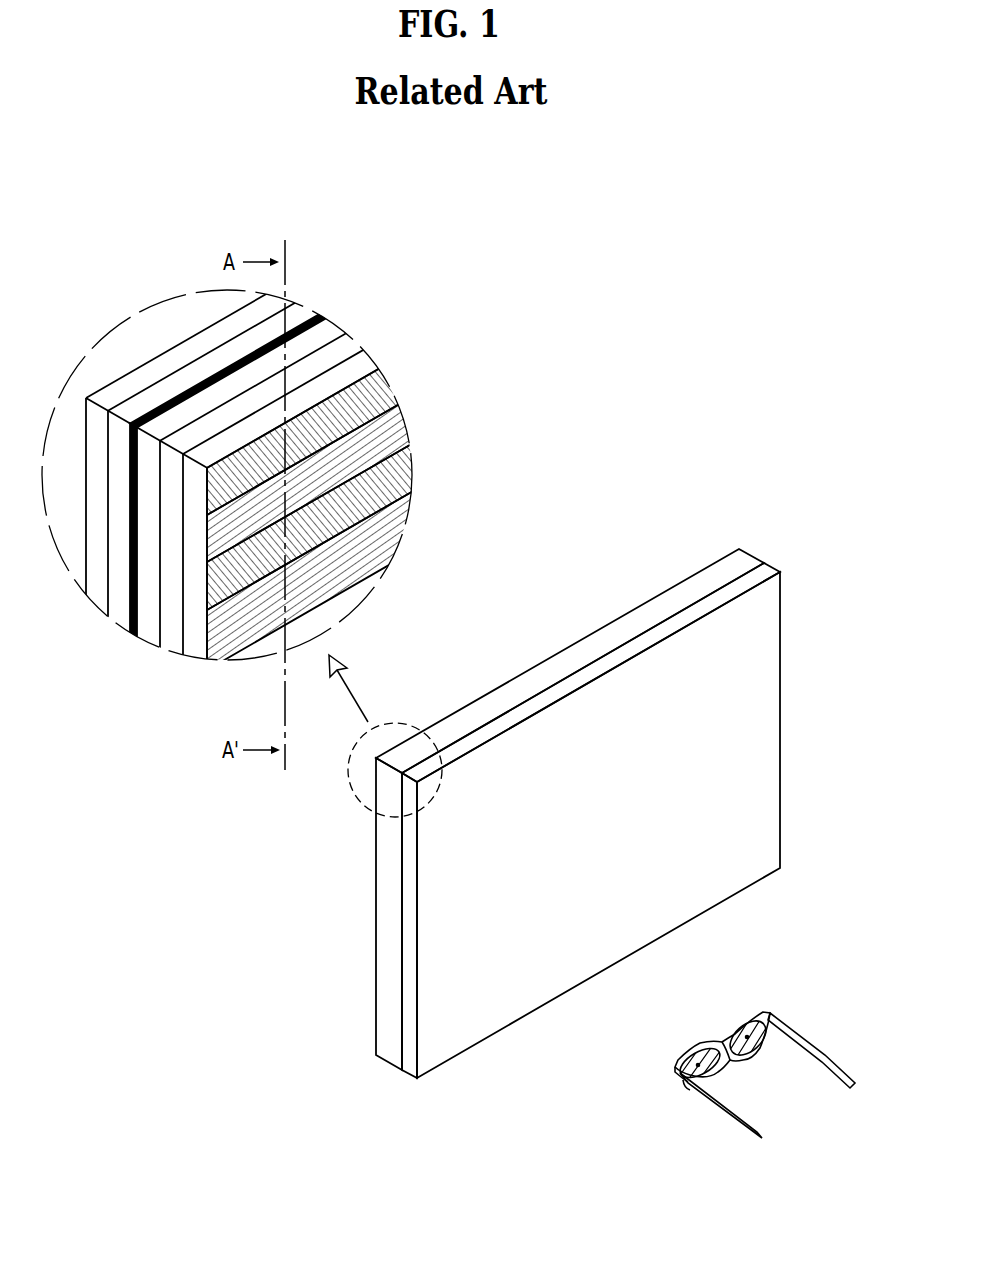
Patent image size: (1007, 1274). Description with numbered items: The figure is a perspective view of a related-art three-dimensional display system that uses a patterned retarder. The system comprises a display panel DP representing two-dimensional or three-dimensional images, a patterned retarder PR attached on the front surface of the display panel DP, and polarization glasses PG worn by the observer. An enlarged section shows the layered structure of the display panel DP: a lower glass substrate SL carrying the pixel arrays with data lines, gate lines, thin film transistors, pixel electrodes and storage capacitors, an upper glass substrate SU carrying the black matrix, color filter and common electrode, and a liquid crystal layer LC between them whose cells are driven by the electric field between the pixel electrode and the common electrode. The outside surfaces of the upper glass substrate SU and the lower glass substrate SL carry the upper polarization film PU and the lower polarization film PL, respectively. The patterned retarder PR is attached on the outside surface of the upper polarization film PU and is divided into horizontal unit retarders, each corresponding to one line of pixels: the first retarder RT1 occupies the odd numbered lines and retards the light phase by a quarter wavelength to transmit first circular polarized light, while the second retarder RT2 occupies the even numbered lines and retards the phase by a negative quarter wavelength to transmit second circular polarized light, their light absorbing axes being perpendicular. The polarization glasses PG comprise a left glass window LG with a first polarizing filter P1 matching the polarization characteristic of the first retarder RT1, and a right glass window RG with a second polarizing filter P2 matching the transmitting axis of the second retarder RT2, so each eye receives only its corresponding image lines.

The lower polarization film PL is at (125, 389).
The lower glass substrate SL is at (153, 408).
The liquid crystal layer LC is at (181, 393).
The upper glass substrate SU is at (152, 635).
The upper polarization film PU is at (175, 646).
The patterned retarder PR is at (351, 520).
The first retarder RT1 is at (387, 385).
The second retarder RT2 is at (400, 433).
The display panel DP is at (78, 619).
The polarization glasses PG is at (747, 1064).
The left glass window LG is at (718, 1072).
The right glass window RG is at (762, 1043).
The first polarizing filter P1 is at (698, 1065).
The second polarizing filter P2 is at (747, 1037).